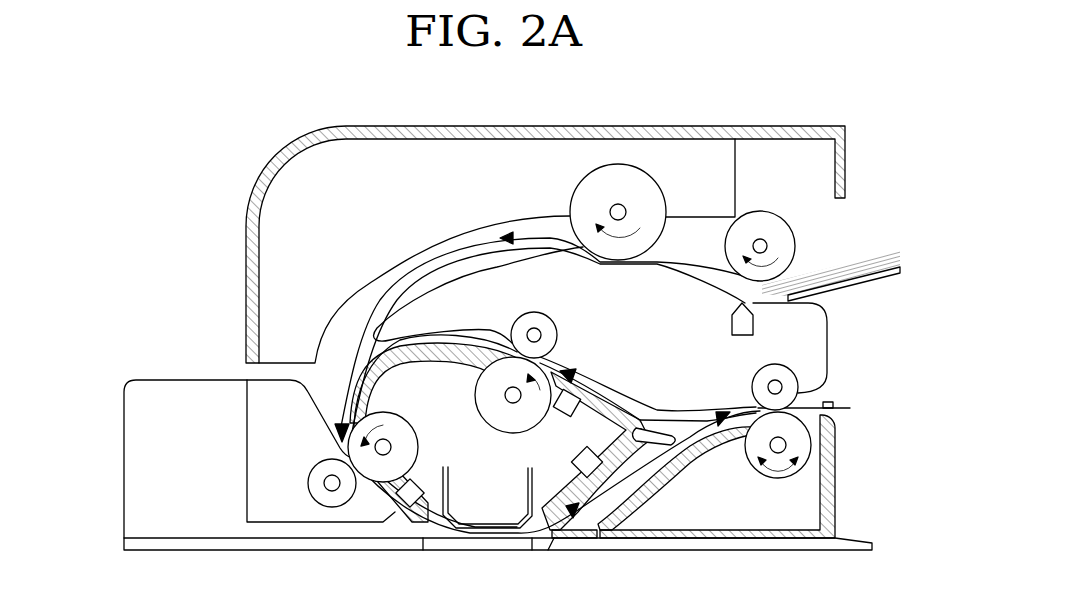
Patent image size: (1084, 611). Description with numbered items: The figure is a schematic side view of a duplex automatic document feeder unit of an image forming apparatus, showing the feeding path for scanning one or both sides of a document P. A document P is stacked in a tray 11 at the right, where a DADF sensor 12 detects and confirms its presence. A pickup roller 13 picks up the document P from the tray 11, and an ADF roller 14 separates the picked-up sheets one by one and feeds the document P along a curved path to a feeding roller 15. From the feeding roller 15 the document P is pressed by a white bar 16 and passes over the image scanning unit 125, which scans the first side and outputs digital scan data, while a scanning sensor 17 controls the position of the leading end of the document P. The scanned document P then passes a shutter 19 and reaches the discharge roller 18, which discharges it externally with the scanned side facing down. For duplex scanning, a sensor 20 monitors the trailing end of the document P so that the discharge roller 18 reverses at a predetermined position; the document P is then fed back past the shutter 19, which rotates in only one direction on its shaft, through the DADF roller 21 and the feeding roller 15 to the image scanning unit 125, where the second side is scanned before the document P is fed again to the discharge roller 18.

The tray 11 is at (862, 288).
The DADF sensor 12 is at (756, 322).
The pickup roller 13 is at (768, 211).
The ADF roller 14 is at (618, 163).
The feeding roller 15 is at (400, 420).
The white bar 16 is at (445, 515).
The scanning sensor 17 is at (405, 520).
The discharge roller 18 is at (805, 470).
The shutter 19 is at (660, 448).
The sensor 20 is at (596, 488).
The DADF roller 21 is at (500, 375).
The image scanning unit 125 is at (483, 540).
The document P is at (873, 256).